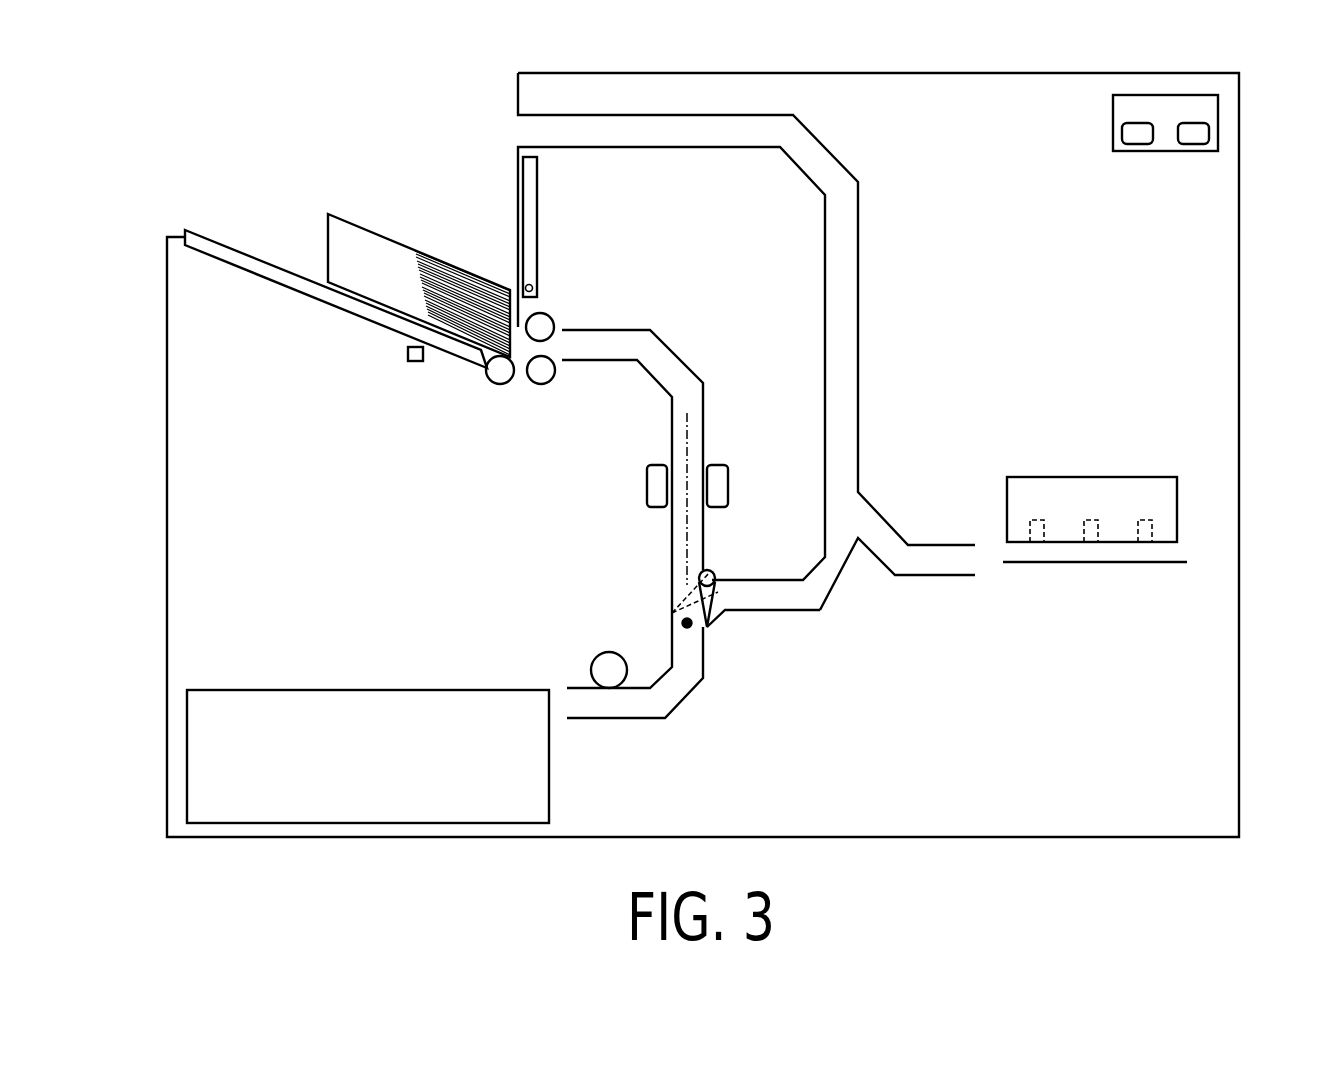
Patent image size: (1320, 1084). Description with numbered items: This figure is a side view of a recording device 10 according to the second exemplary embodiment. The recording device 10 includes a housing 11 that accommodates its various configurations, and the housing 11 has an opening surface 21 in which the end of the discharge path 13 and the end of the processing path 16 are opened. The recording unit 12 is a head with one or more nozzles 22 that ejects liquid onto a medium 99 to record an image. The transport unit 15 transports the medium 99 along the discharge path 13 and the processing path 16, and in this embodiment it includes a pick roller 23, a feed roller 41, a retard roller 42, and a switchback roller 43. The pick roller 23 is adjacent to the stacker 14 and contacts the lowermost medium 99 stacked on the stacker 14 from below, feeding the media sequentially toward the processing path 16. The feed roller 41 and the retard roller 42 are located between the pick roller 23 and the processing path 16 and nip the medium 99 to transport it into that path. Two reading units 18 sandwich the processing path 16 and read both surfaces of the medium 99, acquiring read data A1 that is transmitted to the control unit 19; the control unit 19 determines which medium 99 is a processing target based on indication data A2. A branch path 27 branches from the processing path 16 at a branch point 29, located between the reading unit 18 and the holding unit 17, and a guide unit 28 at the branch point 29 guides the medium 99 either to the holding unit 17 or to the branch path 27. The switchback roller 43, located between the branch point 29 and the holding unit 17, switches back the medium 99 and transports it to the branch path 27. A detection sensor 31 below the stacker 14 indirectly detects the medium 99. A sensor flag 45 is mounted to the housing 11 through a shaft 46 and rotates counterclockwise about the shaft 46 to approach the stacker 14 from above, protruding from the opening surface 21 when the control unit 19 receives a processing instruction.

The recording device 10 is at (148, 106).
The housing 11 is at (1240, 372).
The recording unit 12 is at (1020, 477).
The discharge path 13 is at (883, 520).
The stacker 14 is at (185, 232).
The transport unit 15 is at (598, 303).
The processing path 16 is at (707, 418).
The holding unit 17 is at (257, 690).
The reading unit 18 is at (647, 487).
The control unit 19 is at (1113, 112).
The opening surface 21 is at (518, 93).
The nozzle 22 is at (1090, 528).
The pick roller 23 is at (490, 384).
The branch path 27 is at (768, 612).
The guide unit 28 is at (712, 568).
The branch point 29 is at (683, 625).
The detection sensor 31 is at (415, 361).
The feed roller 41 is at (549, 314).
The retard roller 42 is at (541, 384).
The switchback roller 43 is at (595, 655).
The sensor flag 45 is at (537, 205).
The shaft 46 is at (531, 285).
The medium 99 is at (328, 234).
The read data A1 is at (1135, 144).
The indication data A2 is at (1192, 144).